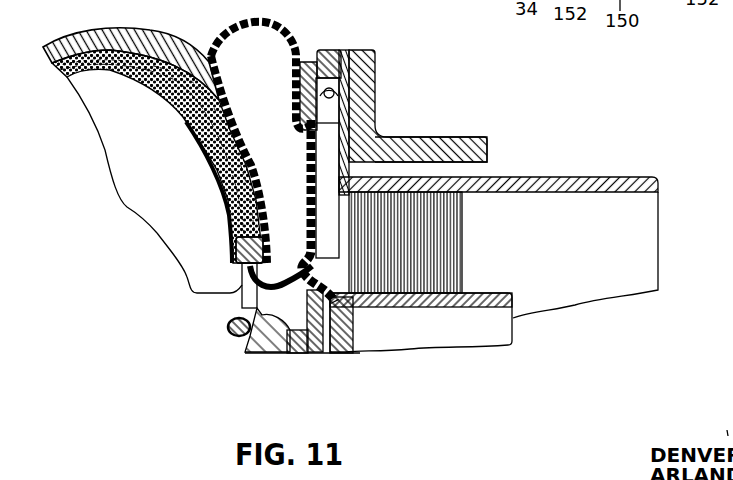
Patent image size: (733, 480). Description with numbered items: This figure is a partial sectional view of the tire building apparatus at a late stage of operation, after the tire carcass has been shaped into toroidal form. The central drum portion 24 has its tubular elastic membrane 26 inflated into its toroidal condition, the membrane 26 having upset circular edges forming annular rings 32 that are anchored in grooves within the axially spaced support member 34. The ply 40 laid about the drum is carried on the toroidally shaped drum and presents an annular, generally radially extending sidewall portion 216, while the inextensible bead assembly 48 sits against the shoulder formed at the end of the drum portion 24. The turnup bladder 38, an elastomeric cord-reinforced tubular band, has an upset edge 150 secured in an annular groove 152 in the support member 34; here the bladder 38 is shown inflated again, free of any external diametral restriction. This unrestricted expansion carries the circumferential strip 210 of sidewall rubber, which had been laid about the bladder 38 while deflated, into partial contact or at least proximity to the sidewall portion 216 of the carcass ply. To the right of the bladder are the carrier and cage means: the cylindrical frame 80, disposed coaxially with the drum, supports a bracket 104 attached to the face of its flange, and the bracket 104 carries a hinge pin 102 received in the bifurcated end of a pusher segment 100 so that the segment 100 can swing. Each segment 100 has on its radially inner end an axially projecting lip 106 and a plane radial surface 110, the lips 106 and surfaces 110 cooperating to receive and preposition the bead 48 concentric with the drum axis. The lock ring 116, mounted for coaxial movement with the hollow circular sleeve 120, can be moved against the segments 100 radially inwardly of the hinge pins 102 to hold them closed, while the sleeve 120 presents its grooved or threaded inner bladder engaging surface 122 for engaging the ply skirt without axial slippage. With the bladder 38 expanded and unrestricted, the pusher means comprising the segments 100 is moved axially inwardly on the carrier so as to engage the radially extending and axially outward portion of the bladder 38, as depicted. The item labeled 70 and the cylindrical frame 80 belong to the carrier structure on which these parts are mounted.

The central drum portion 24 is at (124, 207).
The tubular elastic membrane 26 is at (160, 237).
The annular rings 32 is at (229, 323).
The support members 34 is at (243, 345).
The turnup bladder 38 is at (218, 47).
The ply 40 is at (67, 77).
The bead assembly 48 is at (234, 247).
The body 70 is at (478, 127).
The cylindrical frame 80 is at (481, 152).
The pusher segments 100 is at (327, 147).
The hinge pin 102 is at (334, 93).
The bracket 104 is at (328, 50).
The lip 106 is at (281, 276).
The plane radial surface 110 is at (308, 200).
The lock ring 116 is at (299, 70).
The sleeve 120 is at (660, 203).
The inner bladder engaging surface 122 is at (447, 233).
The upset edge 150 is at (265, 348).
The annular grooves 152 is at (362, 312).
The sidewall strip 210 is at (218, 157).
The sidewall portion 216 is at (230, 178).